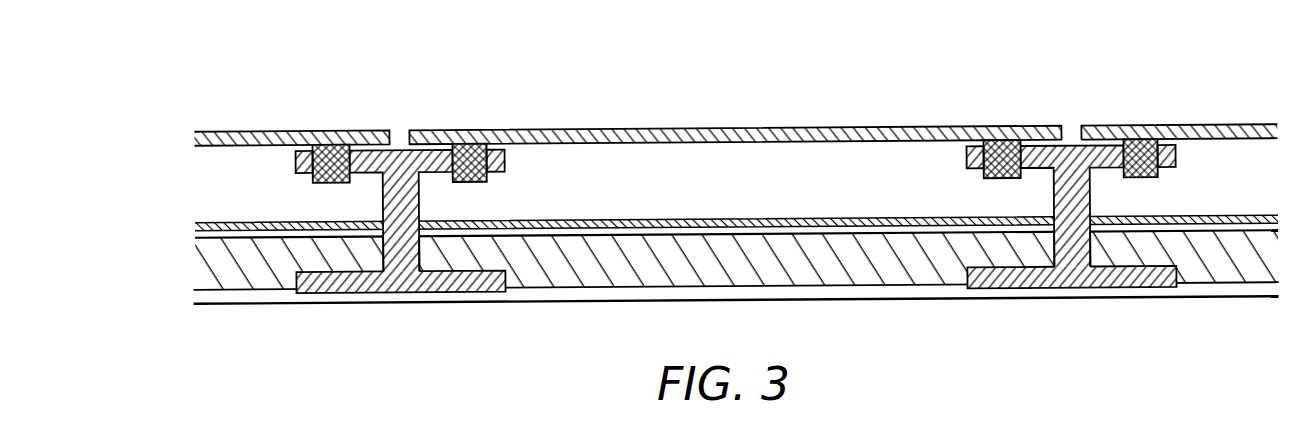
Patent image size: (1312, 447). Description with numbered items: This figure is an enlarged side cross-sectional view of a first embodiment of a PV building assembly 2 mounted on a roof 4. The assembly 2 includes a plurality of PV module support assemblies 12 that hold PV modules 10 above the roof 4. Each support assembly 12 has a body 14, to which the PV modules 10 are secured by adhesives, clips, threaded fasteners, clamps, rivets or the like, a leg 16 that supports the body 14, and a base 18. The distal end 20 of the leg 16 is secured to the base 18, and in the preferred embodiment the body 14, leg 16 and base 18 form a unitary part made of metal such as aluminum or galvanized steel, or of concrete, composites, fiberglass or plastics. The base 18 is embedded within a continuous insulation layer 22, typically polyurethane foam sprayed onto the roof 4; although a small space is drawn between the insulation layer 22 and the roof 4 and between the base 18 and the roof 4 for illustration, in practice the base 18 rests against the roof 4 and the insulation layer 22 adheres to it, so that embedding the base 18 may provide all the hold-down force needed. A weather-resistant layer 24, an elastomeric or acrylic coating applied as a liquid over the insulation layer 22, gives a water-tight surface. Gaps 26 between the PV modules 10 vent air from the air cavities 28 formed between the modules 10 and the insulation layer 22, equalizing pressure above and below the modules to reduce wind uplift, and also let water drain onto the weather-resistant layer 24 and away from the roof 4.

The PV building assembly 2 is at (973, 63).
The roof 4 is at (1183, 298).
The PV module 10 is at (783, 128).
The PV module support assembly 12 is at (1235, 187).
The body 14 is at (967, 155).
The leg 16 is at (1053, 200).
The base 18 is at (967, 282).
The distal end of leg 20 is at (1094, 248).
The insulation layer 22 is at (208, 260).
The weather-resistant layer 24 is at (600, 220).
The gap 26 is at (1070, 123).
The air cavity 28 is at (740, 186).